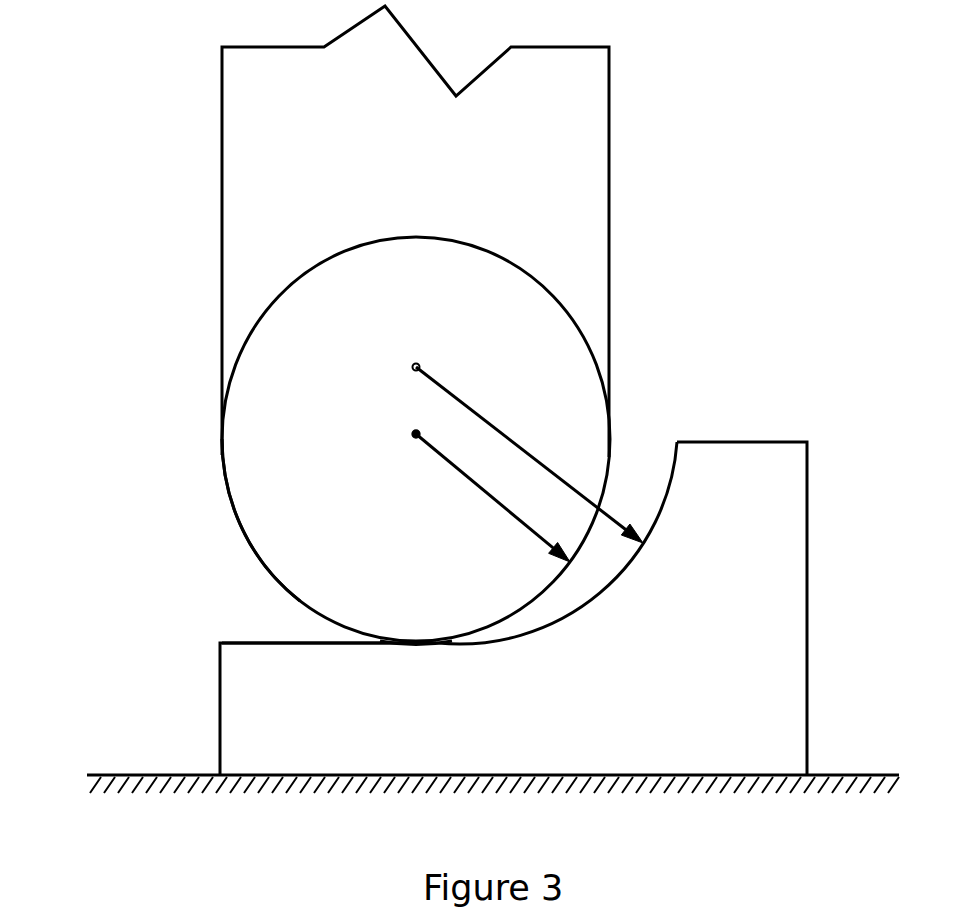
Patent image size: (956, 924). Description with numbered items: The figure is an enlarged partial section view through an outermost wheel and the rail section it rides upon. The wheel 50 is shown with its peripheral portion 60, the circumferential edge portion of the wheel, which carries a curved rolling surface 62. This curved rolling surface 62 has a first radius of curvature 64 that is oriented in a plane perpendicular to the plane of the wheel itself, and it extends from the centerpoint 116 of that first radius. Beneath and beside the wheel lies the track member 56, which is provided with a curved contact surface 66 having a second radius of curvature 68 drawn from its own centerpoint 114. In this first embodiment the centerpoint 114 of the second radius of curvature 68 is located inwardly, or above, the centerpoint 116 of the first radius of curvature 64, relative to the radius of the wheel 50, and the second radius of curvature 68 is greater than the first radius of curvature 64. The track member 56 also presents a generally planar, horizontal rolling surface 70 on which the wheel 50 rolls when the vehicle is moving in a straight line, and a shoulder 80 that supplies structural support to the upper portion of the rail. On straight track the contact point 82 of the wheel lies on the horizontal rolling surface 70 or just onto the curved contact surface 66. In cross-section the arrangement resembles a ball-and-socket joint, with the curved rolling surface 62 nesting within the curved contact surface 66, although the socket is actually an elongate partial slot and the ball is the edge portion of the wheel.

The wheel 50 is at (222, 192).
The peripheral portion 60 is at (248, 458).
The curved rolling surface 62 is at (242, 527).
The first radius of curvature 64 is at (497, 506).
The curved contact surface 66 is at (668, 490).
The second radius of curvature 68 is at (507, 440).
The horizontal rolling surface 70 is at (250, 643).
The track member 56 is at (250, 695).
The shoulder 80 is at (733, 440).
The contact point 82 is at (410, 645).
The centerpoint of the second radius of curvature 114 is at (412, 369).
The centerpoint of the first radius of curvature 116 is at (414, 438).